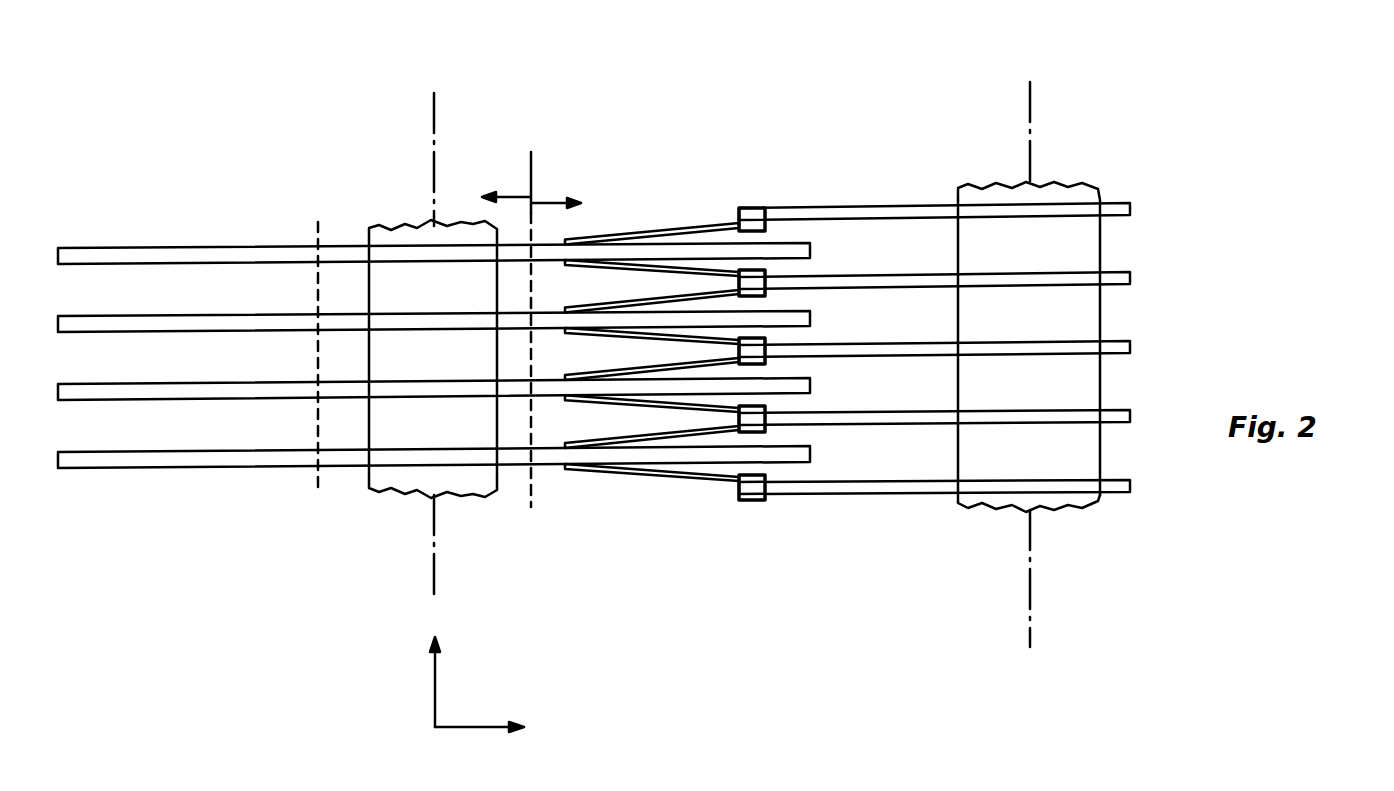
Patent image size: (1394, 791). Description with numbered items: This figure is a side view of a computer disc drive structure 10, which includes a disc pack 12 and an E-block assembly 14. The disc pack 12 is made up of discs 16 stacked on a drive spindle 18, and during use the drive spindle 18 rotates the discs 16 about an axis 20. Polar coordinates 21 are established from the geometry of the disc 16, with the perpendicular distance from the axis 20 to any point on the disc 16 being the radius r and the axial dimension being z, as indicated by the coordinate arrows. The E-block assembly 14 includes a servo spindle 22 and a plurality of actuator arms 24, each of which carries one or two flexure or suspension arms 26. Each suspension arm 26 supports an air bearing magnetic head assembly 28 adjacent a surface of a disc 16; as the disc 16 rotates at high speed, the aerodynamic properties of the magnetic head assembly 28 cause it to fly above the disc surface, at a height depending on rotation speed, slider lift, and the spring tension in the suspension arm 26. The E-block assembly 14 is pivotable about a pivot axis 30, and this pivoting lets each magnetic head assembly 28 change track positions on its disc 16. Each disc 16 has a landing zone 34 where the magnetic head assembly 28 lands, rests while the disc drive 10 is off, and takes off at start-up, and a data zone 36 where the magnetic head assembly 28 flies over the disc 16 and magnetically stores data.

The disc drive structure 10 is at (756, 122).
The disc pack 12 is at (201, 220).
The E-block assembly 14 is at (954, 140).
The discs 16 is at (127, 247).
The drive spindle 18 is at (395, 237).
The axis 20 is at (436, 98).
The polar coordinates 21 is at (437, 672).
The servo spindle 22 is at (1085, 247).
The actuator arms 24 is at (823, 207).
The suspension arms 26 is at (661, 222).
The air bearing magnetic head assembly 28 is at (572, 240).
The pivot axis 30 is at (1032, 111).
The landing zone 34 is at (506, 182).
The data zone 36 is at (556, 185).